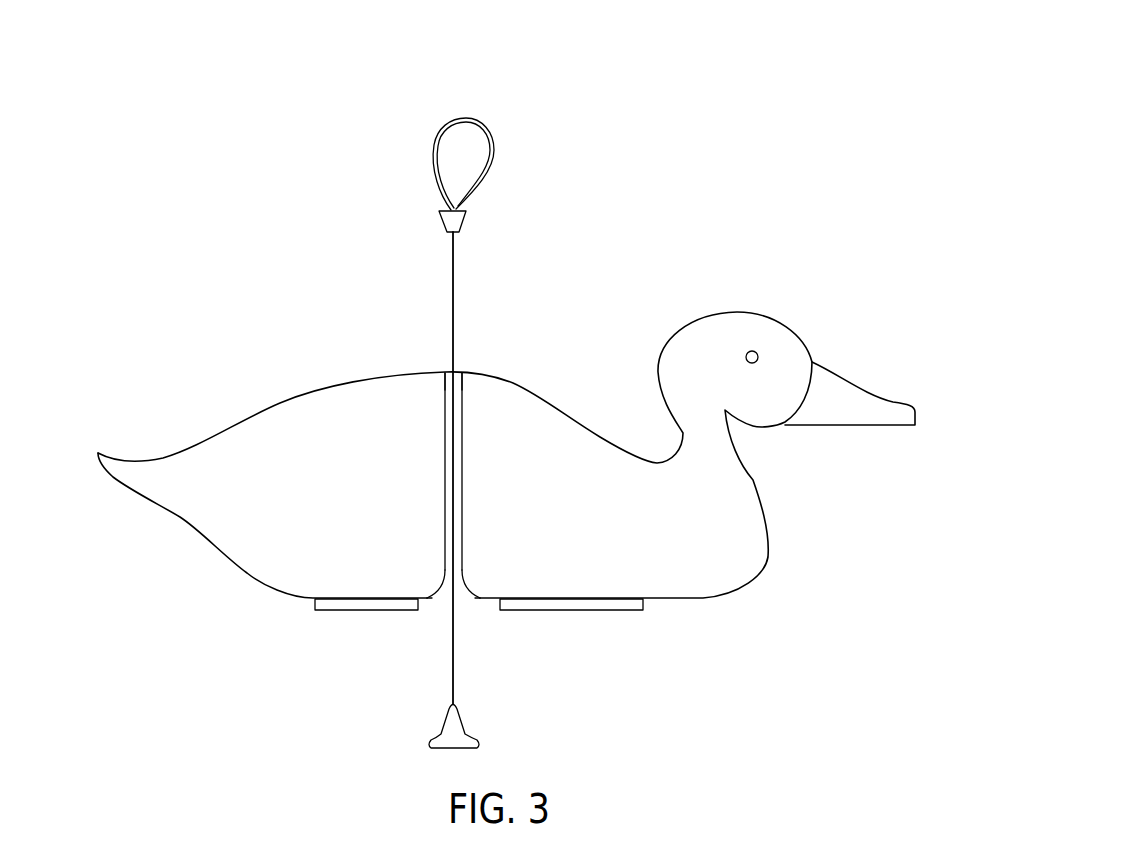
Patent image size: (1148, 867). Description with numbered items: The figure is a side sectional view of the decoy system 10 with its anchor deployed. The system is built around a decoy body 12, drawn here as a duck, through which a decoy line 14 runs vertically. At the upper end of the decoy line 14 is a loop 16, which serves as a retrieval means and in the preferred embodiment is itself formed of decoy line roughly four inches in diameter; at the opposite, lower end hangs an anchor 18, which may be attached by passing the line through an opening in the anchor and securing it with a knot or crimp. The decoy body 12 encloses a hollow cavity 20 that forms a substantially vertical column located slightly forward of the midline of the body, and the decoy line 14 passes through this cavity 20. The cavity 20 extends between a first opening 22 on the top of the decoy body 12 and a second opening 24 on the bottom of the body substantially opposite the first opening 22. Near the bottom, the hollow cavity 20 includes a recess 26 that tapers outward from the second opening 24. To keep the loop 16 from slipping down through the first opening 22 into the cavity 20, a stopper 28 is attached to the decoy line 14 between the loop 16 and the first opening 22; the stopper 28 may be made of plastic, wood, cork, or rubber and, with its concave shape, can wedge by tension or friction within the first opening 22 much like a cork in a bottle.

The decoy system 10 is at (815, 74).
The decoy body 12 is at (747, 550).
The decoy line 14 is at (455, 270).
The loop 16 is at (490, 160).
The anchor 18 is at (456, 733).
The hollow cavity 20 is at (463, 483).
The first opening 22 is at (458, 388).
The second opening 24 is at (446, 602).
The recess 26 is at (468, 585).
The stopper 28 is at (467, 223).